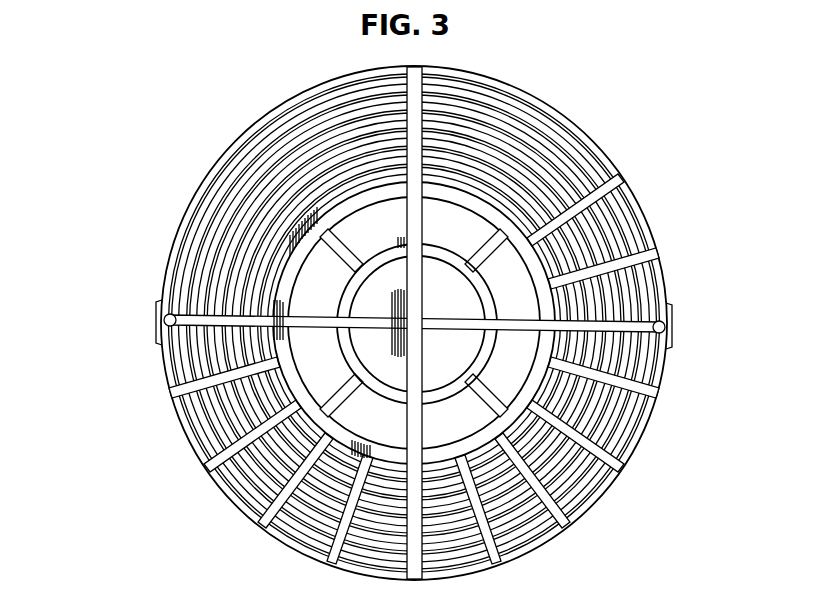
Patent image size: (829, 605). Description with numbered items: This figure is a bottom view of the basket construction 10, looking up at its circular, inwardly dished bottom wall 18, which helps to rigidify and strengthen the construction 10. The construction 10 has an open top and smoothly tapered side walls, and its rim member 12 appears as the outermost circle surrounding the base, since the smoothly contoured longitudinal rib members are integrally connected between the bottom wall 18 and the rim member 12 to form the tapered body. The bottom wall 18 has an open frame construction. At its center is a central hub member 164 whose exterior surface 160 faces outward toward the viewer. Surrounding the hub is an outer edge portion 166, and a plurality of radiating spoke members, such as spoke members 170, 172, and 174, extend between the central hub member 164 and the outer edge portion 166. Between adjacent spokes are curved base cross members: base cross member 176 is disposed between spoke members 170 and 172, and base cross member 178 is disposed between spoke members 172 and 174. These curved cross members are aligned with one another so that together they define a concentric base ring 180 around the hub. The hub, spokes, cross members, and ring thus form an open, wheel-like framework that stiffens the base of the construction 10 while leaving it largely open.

The construction 10 is at (140, 143).
The rim member 12 is at (637, 428).
The bottom wall 18 is at (322, 372).
The exterior surface 160 is at (462, 305).
The central hub member 164 is at (505, 262).
The outer edge portion 166 is at (485, 205).
The spoke member 170 is at (407, 212).
The spoke member 172 is at (357, 222).
The spoke member 174 is at (340, 290).
The base cross member 176 is at (380, 232).
The base cross member 178 is at (333, 280).
The concentric base ring 180 is at (458, 410).